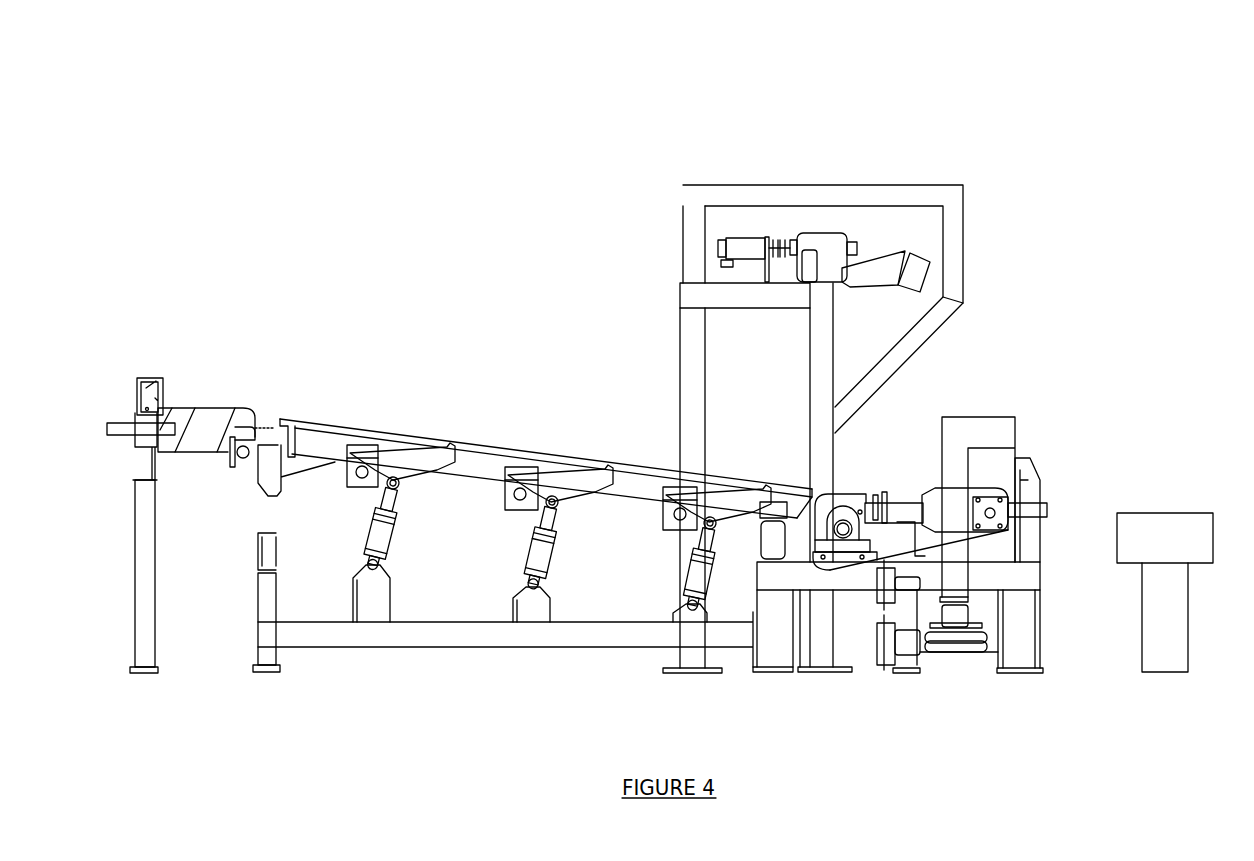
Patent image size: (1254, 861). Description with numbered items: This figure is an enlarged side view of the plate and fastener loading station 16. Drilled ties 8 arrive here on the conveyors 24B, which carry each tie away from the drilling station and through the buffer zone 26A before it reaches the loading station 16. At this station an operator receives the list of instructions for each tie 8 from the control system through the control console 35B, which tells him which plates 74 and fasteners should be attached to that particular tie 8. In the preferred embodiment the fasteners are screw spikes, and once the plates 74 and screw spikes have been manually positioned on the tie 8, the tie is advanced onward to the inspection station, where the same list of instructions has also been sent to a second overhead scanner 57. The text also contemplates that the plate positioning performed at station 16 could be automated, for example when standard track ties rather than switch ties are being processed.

The plate and fastener loading station 16 is at (717, 137).
The second overhead scanner 57 is at (913, 273).
The conveyors 24B is at (148, 388).
The buffer zone 26A is at (487, 447).
The plates 74 is at (970, 415).
The tie 8 is at (1000, 437).
The control console 35B is at (1153, 527).